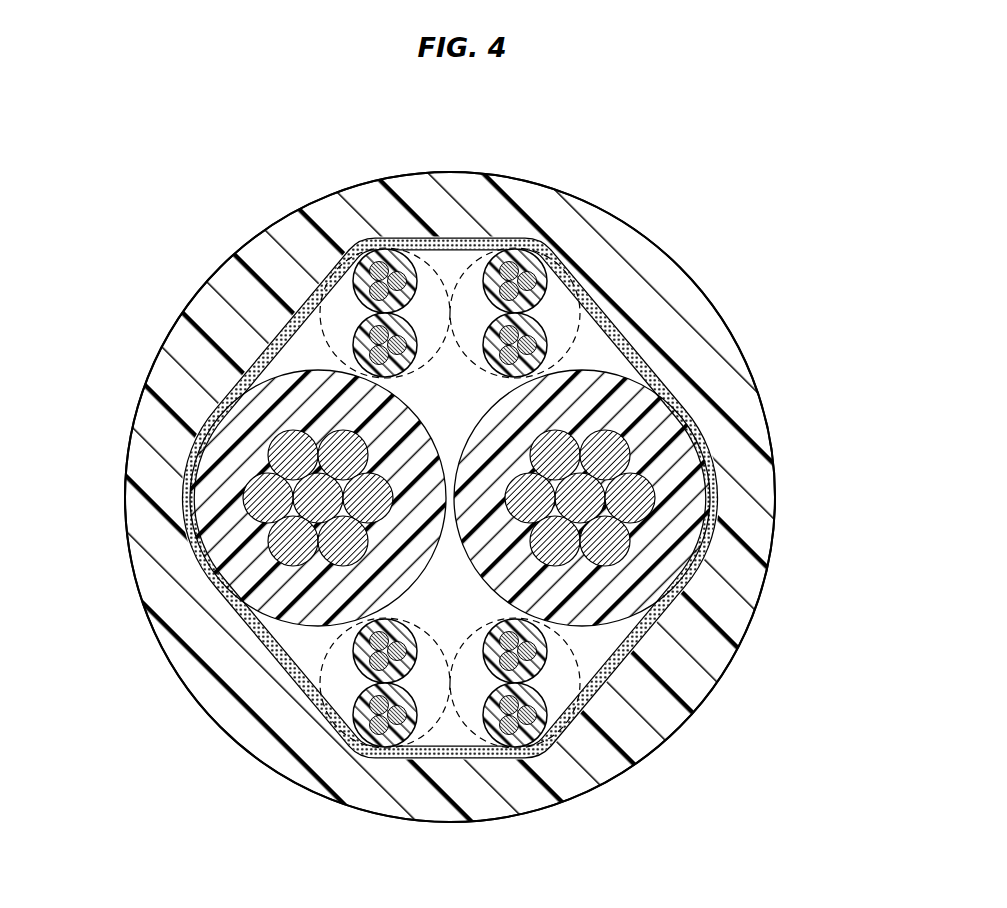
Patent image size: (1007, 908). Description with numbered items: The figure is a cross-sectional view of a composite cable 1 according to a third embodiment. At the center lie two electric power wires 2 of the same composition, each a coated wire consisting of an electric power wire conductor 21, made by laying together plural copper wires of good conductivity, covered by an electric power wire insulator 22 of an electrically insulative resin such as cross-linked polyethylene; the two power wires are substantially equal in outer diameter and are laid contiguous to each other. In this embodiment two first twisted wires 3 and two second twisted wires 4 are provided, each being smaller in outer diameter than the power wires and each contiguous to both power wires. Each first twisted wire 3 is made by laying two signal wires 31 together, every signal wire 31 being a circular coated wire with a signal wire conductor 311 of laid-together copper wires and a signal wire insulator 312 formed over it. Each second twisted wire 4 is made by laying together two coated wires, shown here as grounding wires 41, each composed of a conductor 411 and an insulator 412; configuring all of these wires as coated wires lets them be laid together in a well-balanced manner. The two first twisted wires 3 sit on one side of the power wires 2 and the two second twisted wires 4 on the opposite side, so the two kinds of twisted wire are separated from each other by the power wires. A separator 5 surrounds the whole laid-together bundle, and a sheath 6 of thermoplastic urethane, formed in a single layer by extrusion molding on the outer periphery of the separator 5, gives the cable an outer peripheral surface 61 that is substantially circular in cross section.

The composite cable 1 is at (713, 166).
The electric power wire 2 is at (447, 498).
The electric power wire conductor 21 is at (237, 491).
The electric power wire insulator 22 is at (233, 528).
The first twisted wire 3 is at (426, 748).
The signal wire 31 is at (354, 676).
The signal wire conductor 311 is at (363, 727).
The signal wire insulator 312 is at (393, 730).
The second twisted wire 4 is at (449, 451).
The grounding wire 41 is at (380, 249).
The conductor 411 is at (366, 268).
The insulator 412 is at (388, 262).
The separator 5 is at (643, 342).
The sheath 6 is at (188, 662).
The outer peripheral surface 61 is at (200, 708).